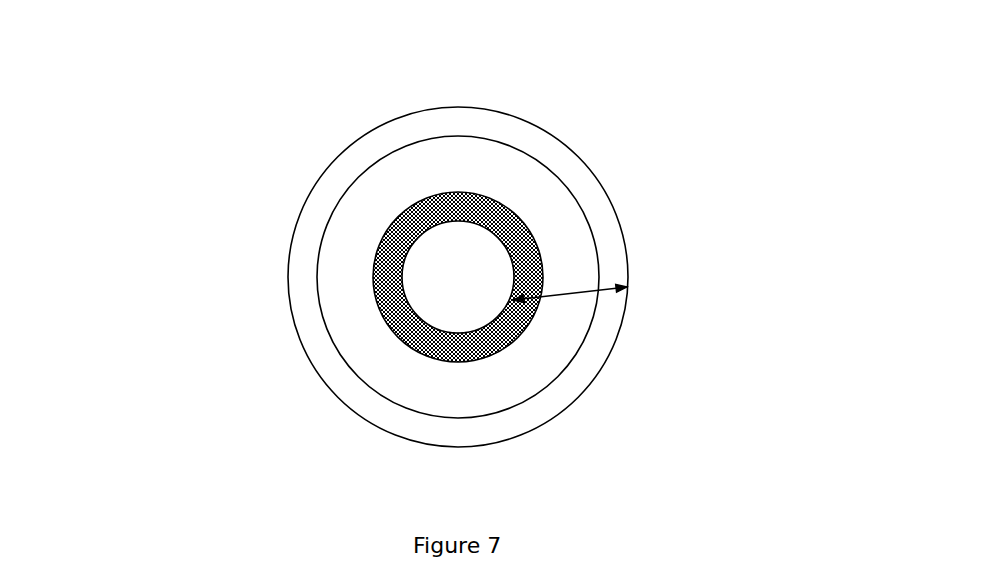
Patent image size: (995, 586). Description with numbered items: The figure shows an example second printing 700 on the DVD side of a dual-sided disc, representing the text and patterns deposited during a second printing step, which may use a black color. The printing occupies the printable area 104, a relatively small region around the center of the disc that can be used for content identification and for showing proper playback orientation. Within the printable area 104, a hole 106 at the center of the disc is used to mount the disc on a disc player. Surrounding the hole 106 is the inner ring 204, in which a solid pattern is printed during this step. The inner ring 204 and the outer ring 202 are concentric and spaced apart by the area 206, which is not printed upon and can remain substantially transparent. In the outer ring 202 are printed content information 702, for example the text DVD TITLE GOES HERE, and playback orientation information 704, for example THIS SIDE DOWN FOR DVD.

The second printing on the DVD side 700 is at (187, 60).
The content information 702 is at (575, 160).
The playback orientation information 704 is at (365, 408).
The outer ring 202 is at (607, 229).
The inner ring 204 is at (391, 275).
The area 206 is at (458, 277).
The hole 106 is at (458, 277).
The printable area 104 is at (567, 300).